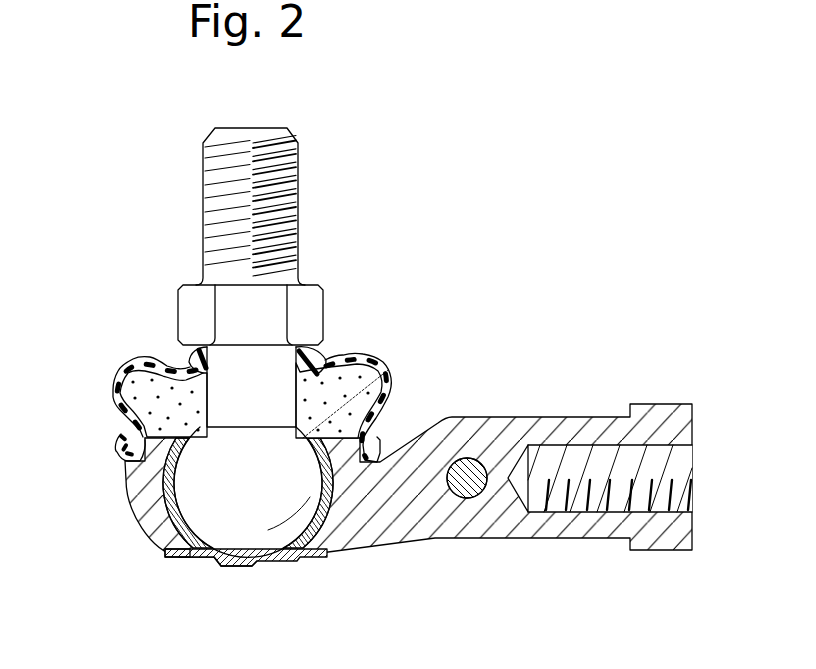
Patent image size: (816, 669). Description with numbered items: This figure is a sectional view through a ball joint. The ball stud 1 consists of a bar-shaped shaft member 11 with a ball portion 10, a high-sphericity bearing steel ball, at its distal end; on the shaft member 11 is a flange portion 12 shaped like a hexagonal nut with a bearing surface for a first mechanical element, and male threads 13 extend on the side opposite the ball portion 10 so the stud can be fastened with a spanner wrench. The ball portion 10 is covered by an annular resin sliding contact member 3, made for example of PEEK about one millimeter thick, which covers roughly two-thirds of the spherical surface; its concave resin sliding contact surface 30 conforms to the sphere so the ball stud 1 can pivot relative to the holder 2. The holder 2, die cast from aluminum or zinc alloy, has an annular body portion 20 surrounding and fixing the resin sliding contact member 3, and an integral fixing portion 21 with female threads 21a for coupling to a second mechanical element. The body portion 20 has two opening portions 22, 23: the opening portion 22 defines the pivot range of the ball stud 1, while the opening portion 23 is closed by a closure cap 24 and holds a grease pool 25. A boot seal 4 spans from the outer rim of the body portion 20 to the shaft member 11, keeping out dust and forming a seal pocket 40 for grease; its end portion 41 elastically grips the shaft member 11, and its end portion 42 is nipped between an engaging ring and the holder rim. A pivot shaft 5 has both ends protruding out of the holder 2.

The ball stud 1 is at (254, 349).
The ball portion 10 is at (312, 493).
The shaft member 11 is at (190, 363).
The flange portion 12 is at (307, 300).
The male threads 13 is at (297, 178).
The holder 2 is at (364, 469).
The body portion 20 is at (377, 478).
The fixing portion 21 is at (563, 478).
The female threads 21a is at (597, 452).
The opening portion 22 is at (376, 379).
The opening portion 23 is at (243, 595).
The closure cap 24 is at (247, 567).
The grease pool 25 is at (200, 556).
The resin sliding contact member 3 is at (243, 509).
The resin sliding contact surface 30 is at (172, 482).
The boot seal 4 is at (221, 379).
The seal pocket 40 is at (137, 388).
The end portion 41 is at (310, 348).
The end portion 42 is at (117, 445).
The pivot shaft 5 is at (469, 458).